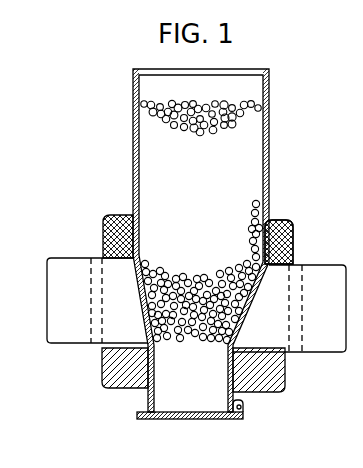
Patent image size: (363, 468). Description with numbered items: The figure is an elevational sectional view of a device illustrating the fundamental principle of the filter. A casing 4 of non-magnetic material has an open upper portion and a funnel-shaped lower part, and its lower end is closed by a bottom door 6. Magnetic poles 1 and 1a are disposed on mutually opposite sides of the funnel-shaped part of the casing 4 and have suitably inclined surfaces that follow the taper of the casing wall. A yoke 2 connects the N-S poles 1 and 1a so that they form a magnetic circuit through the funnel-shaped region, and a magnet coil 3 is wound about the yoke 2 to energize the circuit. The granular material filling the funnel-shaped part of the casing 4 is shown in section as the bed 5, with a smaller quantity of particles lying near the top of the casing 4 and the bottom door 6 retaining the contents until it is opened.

The magnetic pole 1 is at (113, 268).
The magnetic pole 1a is at (273, 280).
The yoke 2 is at (70, 344).
The magnet coil 3 is at (272, 222).
The casing 4 is at (269, 116).
The pellet bed 5 is at (218, 275).
The bottom door 6 is at (183, 416).